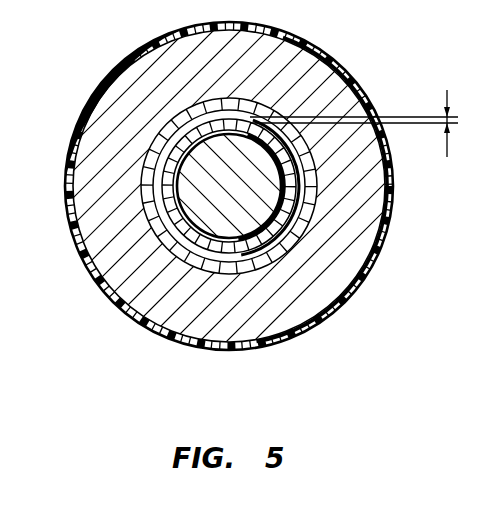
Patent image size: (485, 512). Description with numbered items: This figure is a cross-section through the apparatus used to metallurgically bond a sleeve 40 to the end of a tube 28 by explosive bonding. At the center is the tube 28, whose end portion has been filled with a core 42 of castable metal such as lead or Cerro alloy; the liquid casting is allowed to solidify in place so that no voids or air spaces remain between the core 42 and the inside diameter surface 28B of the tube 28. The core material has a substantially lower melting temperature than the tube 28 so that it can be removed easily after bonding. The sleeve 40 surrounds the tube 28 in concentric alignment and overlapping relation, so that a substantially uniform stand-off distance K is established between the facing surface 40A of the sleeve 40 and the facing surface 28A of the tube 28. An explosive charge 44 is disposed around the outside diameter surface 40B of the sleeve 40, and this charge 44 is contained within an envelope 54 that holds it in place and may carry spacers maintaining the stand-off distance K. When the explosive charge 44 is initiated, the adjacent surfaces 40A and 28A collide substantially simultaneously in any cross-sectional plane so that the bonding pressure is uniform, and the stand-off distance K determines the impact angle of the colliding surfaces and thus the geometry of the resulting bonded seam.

The tube 28 is at (337, 297).
The facing surface of the tube 28A is at (373, 250).
The inside diameter surface of the tube 28B is at (192, 210).
The sleeve 40 is at (258, 197).
The facing surface of the sleeve 40A is at (164, 183).
The outside diameter surface of the sleeve 40B is at (170, 143).
The core 42 is at (285, 210).
The explosive charge 44 is at (350, 63).
The envelope 54 is at (100, 83).
The stand-off distance K is at (361, 123).